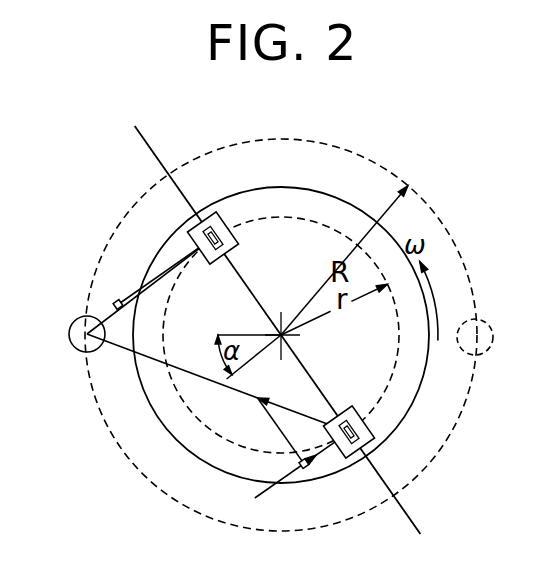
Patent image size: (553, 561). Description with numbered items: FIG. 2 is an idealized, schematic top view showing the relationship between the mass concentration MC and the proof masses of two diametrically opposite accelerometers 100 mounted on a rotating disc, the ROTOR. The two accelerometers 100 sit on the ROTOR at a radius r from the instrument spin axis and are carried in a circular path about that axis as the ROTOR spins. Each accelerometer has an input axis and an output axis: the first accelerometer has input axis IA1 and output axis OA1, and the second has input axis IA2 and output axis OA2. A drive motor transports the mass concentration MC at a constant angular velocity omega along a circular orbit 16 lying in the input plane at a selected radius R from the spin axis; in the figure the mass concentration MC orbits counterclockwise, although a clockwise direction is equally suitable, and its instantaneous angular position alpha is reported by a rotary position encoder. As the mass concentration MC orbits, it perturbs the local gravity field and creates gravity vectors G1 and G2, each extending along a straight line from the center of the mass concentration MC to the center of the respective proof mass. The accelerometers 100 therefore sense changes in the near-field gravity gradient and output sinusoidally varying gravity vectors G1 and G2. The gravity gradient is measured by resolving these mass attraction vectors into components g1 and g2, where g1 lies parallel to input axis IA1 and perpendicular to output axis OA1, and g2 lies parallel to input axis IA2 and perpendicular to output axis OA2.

The accelerometer 100 is at (233, 224).
The circular orbit 16 is at (450, 233).
The rotor ROTOR is at (220, 475).
The mass concentration MC is at (65, 335).
The output axis of first accelerometer OA1 is at (208, 229).
The output axis of second accelerometer OA2 is at (366, 434).
The input axis of first accelerometer IA1 is at (135, 288).
The input axis of second accelerometer IA2 is at (291, 471).
The gravity vector component g1 is at (162, 262).
The gravity vector component g2 is at (328, 453).
The gravity vector G1 is at (138, 290).
The gravity vector G2 is at (290, 405).